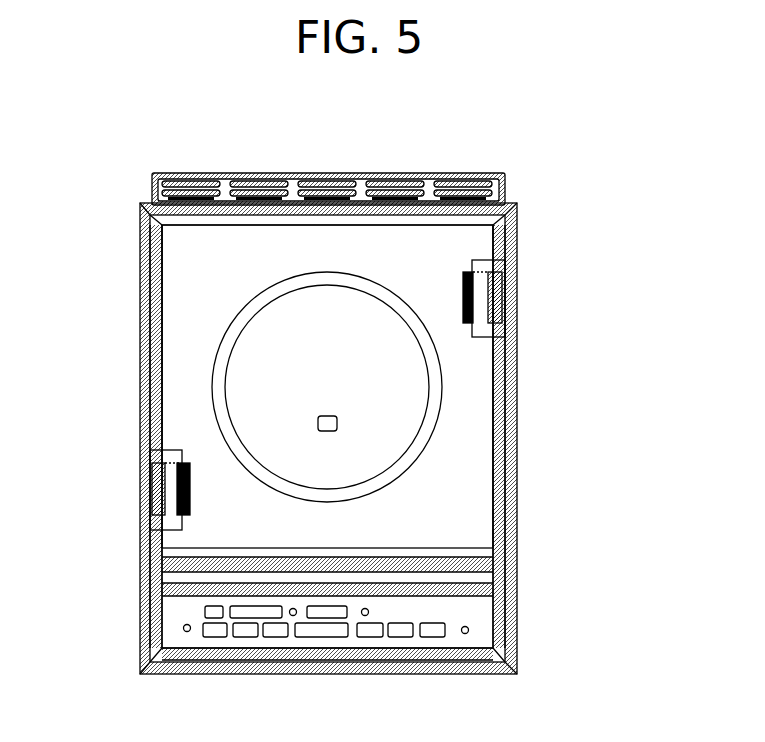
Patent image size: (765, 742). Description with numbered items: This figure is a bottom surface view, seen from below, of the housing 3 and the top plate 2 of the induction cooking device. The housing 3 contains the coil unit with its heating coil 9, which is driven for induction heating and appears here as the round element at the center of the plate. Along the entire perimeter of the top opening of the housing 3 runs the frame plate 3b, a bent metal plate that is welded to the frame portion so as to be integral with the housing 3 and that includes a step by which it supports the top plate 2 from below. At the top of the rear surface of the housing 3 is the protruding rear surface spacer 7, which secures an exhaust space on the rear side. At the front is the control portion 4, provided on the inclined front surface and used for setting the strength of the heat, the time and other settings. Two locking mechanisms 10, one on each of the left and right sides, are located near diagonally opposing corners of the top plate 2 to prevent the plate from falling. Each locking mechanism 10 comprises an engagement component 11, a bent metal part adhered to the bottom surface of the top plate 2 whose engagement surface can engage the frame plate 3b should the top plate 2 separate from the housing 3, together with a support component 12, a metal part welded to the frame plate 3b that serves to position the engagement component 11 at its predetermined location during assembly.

The top plate 2 is at (462, 244).
The housing 3 is at (513, 388).
The frame plate 3b is at (143, 413).
The control portion 4 is at (435, 632).
The rear surface spacer 7 is at (457, 185).
The heating coil 9 is at (318, 423).
The locking mechanism 10 is at (339, 440).
The engagement component 11 is at (495, 283).
The support component 12 is at (490, 345).